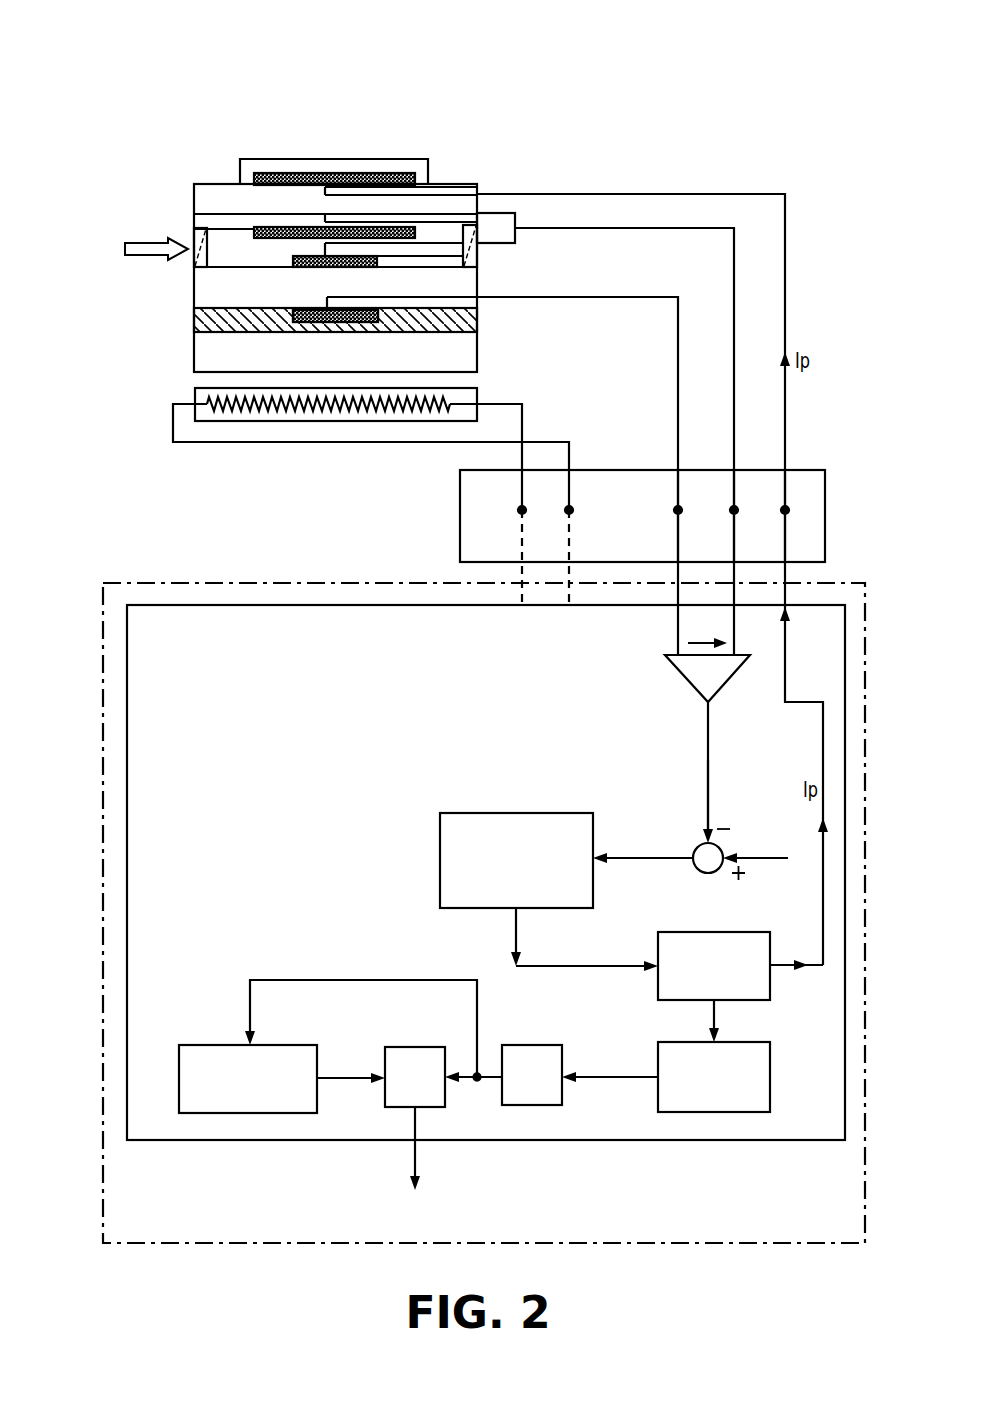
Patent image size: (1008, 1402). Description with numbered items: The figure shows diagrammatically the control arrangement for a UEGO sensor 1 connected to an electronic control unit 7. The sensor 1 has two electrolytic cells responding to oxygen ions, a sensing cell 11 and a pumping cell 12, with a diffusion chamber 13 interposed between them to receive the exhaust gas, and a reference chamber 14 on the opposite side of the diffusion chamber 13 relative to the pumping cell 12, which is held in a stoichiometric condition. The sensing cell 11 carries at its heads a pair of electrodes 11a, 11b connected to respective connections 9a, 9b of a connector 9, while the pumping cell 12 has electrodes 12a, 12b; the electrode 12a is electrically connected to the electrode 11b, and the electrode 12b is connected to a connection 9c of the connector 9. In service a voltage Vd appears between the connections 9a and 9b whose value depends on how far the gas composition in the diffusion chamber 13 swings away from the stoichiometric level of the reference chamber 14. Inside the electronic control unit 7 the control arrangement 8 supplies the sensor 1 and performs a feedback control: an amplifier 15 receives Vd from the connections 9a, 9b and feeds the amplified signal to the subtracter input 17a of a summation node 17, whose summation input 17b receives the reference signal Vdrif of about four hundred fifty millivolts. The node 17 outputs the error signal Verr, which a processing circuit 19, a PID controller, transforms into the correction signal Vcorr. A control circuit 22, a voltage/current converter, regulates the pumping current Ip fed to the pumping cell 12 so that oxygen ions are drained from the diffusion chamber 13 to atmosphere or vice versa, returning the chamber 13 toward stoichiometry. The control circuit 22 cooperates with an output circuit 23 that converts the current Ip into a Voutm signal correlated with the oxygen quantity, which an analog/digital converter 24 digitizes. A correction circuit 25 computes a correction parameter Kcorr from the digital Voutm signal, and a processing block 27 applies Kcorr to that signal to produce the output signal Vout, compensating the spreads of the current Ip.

The sensor 1 is at (262, 104).
The pumping cell 12 is at (222, 195).
The electrode 12a is at (263, 227).
The electrode 12b is at (372, 175).
The diffusion chamber 13 is at (228, 263).
The sensing cell 11 is at (203, 305).
The electrode 11a is at (357, 322).
The electrode 11b is at (365, 268).
The reference chamber 14 is at (203, 358).
The connector 9 is at (828, 466).
The connection 9a is at (678, 510).
The connection 9b is at (734, 510).
The connection 9c is at (787, 510).
The electronic control unit 7 is at (688, 1256).
The control arrangement 8 is at (247, 1155).
The amplifier 15 is at (725, 672).
The summation node 17 is at (702, 872).
The subtracter input 17a is at (708, 797).
The summation input 17b is at (778, 860).
The processing circuit 19 is at (470, 813).
The control circuit 22 is at (750, 932).
The output circuit 23 is at (770, 1050).
The analog/digital converter 24 is at (562, 1095).
The correction circuit 25 is at (218, 1045).
The processing block 27 is at (410, 1047).